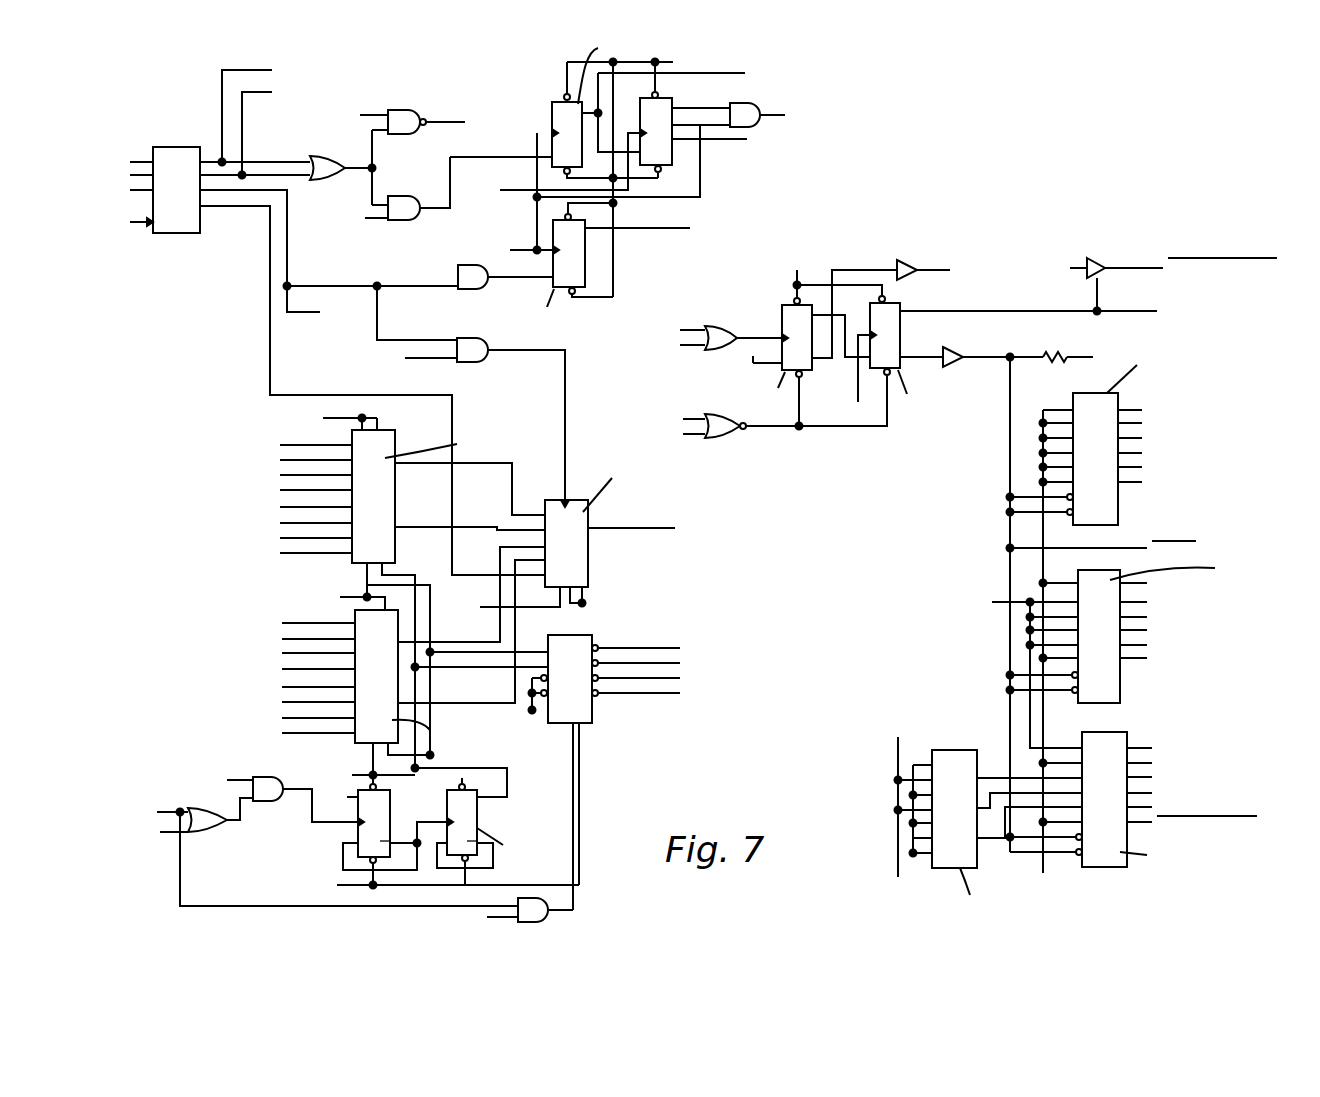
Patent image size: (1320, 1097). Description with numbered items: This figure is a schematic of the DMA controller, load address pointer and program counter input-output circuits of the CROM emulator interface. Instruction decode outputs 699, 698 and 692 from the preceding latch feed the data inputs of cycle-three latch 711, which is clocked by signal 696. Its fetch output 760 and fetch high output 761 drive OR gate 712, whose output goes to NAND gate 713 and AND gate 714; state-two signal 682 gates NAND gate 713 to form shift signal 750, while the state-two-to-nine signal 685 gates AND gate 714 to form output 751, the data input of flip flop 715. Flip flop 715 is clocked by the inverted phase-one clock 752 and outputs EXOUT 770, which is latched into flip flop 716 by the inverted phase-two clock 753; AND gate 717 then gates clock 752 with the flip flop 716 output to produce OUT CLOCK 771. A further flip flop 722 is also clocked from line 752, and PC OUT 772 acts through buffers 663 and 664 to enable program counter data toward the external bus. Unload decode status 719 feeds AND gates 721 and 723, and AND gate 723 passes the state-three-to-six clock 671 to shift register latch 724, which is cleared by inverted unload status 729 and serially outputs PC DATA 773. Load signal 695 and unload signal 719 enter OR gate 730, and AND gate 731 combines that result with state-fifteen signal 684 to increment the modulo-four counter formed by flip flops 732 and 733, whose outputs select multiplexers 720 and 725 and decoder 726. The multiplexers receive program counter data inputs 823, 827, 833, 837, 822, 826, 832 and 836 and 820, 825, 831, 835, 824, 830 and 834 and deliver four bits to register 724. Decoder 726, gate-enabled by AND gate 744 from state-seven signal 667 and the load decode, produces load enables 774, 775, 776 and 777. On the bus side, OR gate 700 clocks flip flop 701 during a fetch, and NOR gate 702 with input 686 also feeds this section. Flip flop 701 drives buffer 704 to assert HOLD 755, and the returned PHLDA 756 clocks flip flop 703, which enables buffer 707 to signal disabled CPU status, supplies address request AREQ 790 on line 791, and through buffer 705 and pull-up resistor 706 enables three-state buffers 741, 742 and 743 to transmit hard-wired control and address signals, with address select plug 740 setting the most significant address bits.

The fetch instruction decode output 699 is at (337, 885).
The instruction decode output 698 is at (130, 175).
The unload address instruction decode output 692 is at (130, 190).
The clock signal 696 is at (130, 222).
The cycle 3 latch 711 is at (183, 147).
The fetch decode output 760 is at (272, 70).
The fetch high decode output 761 is at (272, 92).
The OR gate 712 is at (333, 156).
The NAND gate 713 is at (410, 112).
The state 2 signal 682 is at (366, 102).
The shift signal 750 is at (465, 122).
The AND gate 714 is at (405, 196).
The state 2 to state 9 signal 685 is at (366, 217).
The AND gate output 751 is at (500, 157).
The inverted phase two clock signal 753 is at (505, 190).
The inverted phase one clock signal 752 is at (703, 197).
The flip flop 715 is at (551, 106).
The EXOUT signal 770 is at (678, 61).
The AND gate 717 is at (746, 103).
The OUT CLOCK signal 771 is at (795, 113).
The flip flop 716 is at (672, 150).
The PC OUT signal 772 is at (660, 227).
The flip-flop 722 is at (585, 265).
The AND gate 721 is at (460, 265).
The unload address decode status signal 719 is at (160, 833).
The inverted unload status decode signal 729 is at (270, 280).
The AND gate 723 is at (472, 330).
The state 3 to state 6 phase one signal 671 is at (405, 358).
The OR gate 700 is at (706, 327).
The buffer 663 is at (680, 330).
The data out buffer 664 is at (680, 345).
The flip flop 701 is at (782, 305).
The NOR gate 702 is at (740, 417).
The signal line 686 is at (683, 419).
The PHLDA signal 756 is at (858, 400).
The flip flop 703 is at (900, 306).
The address request AREQ signal 790 is at (1150, 311).
The buffer 704 is at (907, 260).
The HOLD signal 755 is at (950, 270).
The buffer 705 is at (955, 348).
The pull up resistor 706 is at (1055, 352).
The buffer 707 is at (1100, 257).
The three state buffer 743 is at (1120, 517).
The AREQ line 791 is at (1126, 542).
The three state buffer 742 is at (1122, 690).
The three state buffer 741 is at (1127, 736).
The address select plug 740 is at (963, 750).
The multiplexer 720 is at (398, 430).
The input line 823 is at (280, 445).
The input line 827 is at (280, 460).
The input line 833 is at (280, 475).
The input line 837 is at (280, 490).
The input line 822 is at (280, 507).
The input line 826 is at (280, 523).
The input line 832 is at (280, 538).
The input line 836 is at (280, 553).
The multiplexer 725 is at (355, 743).
The input line 820 is at (340, 597).
The input line 825 is at (282, 639).
The input line 831 is at (282, 653).
The input line 835 is at (282, 669).
The input line 824 is at (282, 702).
The input line 830 is at (282, 718).
The input line 834 is at (282, 733).
The shift register latch 724 is at (590, 578).
The PC DATA output 773 is at (646, 528).
The two to four decoder 726 is at (595, 726).
The LD1 load enable output 774 is at (680, 648).
The LD2 load enable output 775 is at (680, 663).
The LD3 load enable output 776 is at (680, 678).
The LD4 load enable output 777 is at (680, 693).
The OR gate 730 is at (217, 829).
The LDM1 signal 695 is at (157, 810).
The state 15 signal 684 is at (227, 780).
The AND gate 731 is at (270, 802).
The flip flop 732 is at (343, 843).
The flip flop 733 is at (480, 800).
The state 7 phase two signal 667 is at (479, 924).
The AND gate 744 is at (550, 915).